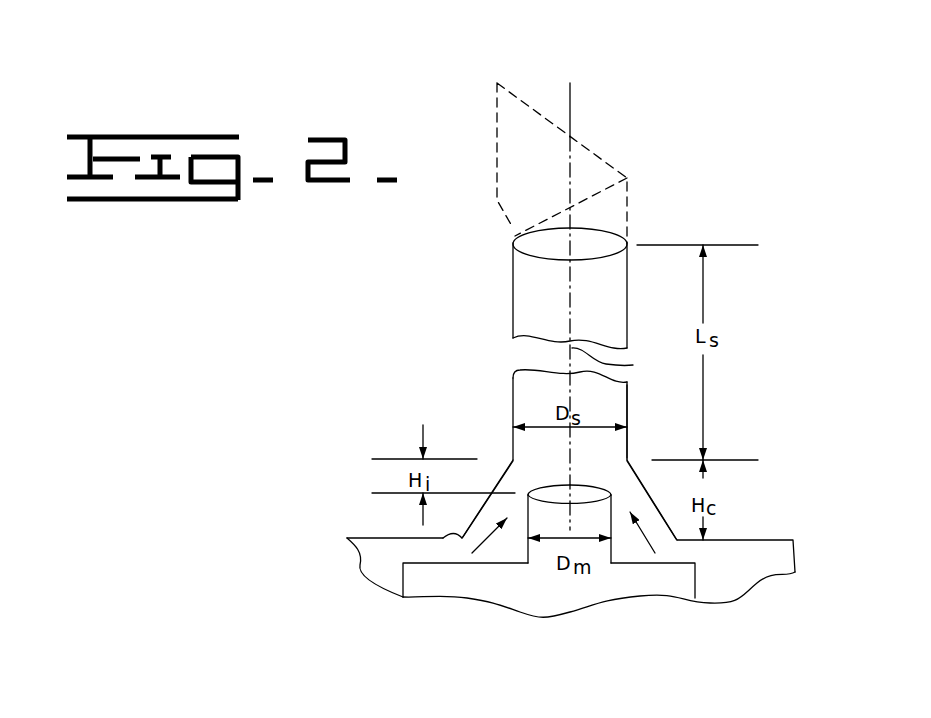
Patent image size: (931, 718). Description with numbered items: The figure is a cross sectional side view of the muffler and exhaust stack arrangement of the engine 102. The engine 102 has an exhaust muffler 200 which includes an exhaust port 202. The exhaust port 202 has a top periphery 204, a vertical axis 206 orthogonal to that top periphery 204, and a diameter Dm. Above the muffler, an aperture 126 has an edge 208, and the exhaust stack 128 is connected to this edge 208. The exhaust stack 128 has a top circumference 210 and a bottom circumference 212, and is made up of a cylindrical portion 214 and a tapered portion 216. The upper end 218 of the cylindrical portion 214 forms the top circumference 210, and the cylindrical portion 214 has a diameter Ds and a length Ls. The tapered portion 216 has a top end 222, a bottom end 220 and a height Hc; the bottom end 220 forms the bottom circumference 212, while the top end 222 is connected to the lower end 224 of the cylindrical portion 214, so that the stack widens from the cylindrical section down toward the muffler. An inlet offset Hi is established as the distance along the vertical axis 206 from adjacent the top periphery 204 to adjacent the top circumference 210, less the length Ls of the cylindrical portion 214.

The engine 102 is at (548, 600).
The aperture 126 is at (655, 532).
The exhaust stack 128 is at (507, 372).
The exhaust muffler 200 is at (611, 553).
The exhaust port 202 is at (577, 493).
The top periphery 204 is at (555, 483).
The vertical axis 206 is at (624, 362).
The edge 208 is at (458, 538).
The top circumference 210 is at (595, 232).
The bottom circumference 212 is at (682, 540).
The cylindrical portion 214 is at (633, 387).
The tapered portion 216 is at (653, 487).
The upper end 218 is at (507, 277).
The bottom end 220 is at (460, 526).
The top end 222 is at (500, 457).
The lower end 224 is at (632, 450).